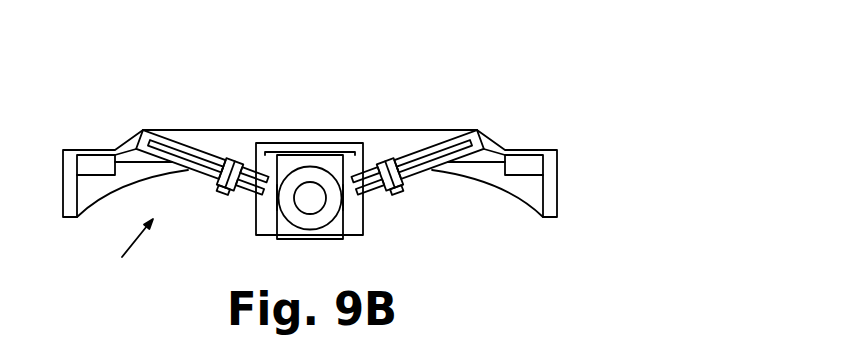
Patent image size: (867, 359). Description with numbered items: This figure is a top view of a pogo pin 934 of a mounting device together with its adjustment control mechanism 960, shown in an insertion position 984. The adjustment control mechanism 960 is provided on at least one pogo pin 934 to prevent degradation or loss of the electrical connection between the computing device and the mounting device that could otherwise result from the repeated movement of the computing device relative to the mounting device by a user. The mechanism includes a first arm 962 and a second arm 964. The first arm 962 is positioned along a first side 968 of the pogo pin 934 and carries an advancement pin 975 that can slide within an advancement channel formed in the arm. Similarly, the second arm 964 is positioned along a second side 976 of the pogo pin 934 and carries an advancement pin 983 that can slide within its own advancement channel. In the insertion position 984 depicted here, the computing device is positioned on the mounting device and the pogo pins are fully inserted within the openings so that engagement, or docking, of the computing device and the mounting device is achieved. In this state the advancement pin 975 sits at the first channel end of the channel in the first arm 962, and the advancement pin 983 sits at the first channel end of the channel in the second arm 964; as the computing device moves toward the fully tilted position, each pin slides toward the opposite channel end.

The adjustment control mechanism 960 is at (491, 140).
The first arm 962 is at (196, 149).
The second arm 964 is at (423, 152).
The pogo pin 934 is at (311, 182).
The advancement pin 975 is at (224, 194).
The advancement pin 983 is at (397, 194).
The first side 968 is at (277, 196).
The second side 976 is at (343, 196).
The insertion position 984 is at (127, 252).